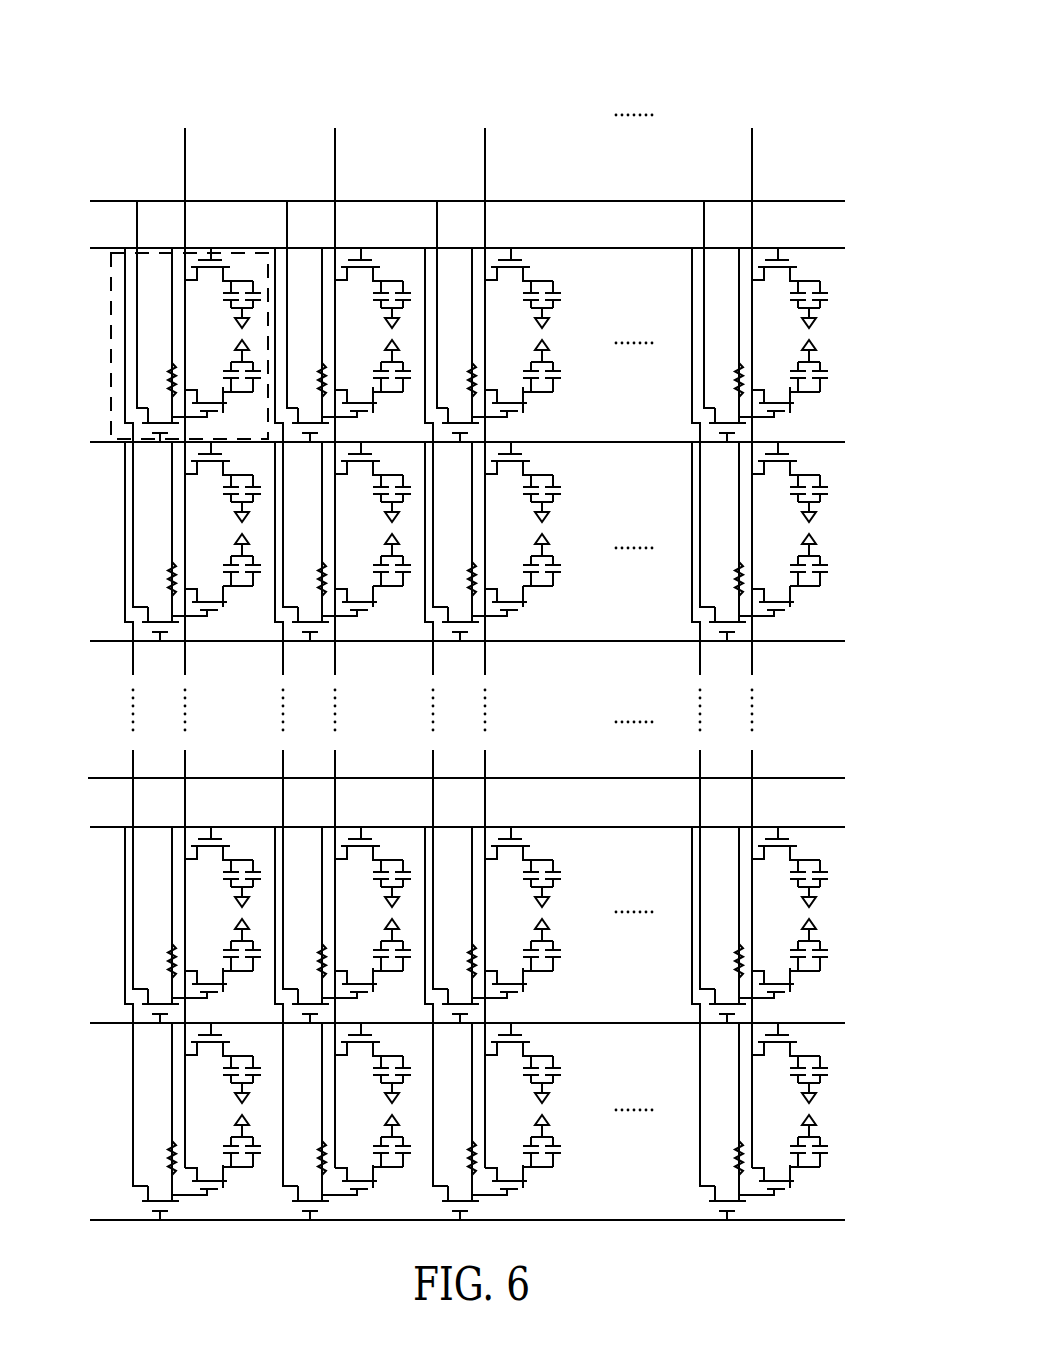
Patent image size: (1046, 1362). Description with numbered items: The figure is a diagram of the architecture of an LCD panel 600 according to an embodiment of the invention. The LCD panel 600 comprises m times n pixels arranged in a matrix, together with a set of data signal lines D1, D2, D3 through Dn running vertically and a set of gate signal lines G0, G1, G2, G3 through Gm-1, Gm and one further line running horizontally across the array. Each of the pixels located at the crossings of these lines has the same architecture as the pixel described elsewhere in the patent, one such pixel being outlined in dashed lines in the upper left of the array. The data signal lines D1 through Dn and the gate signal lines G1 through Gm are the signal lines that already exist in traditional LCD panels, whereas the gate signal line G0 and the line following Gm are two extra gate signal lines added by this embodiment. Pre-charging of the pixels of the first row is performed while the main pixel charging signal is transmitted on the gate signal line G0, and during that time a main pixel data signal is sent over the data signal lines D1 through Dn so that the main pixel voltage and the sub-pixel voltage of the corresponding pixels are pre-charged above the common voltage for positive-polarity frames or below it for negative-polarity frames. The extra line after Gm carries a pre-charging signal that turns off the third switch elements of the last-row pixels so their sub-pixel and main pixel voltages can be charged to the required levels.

The LCD panel 600 is at (748, 56).
The data signal line D1 is at (183, 628).
The data signal line D2 is at (333, 628).
The data signal line D3 is at (482, 628).
The data signal line Dn is at (747, 628).
The gate signal line G0 is at (449, 197).
The gate signal line G1 is at (449, 244).
The gate signal line G2 is at (449, 437).
The gate signal line G3 is at (449, 624).
The gate signal line Gm-1 is at (444, 812).
The gate signal line Gm is at (446, 1013).